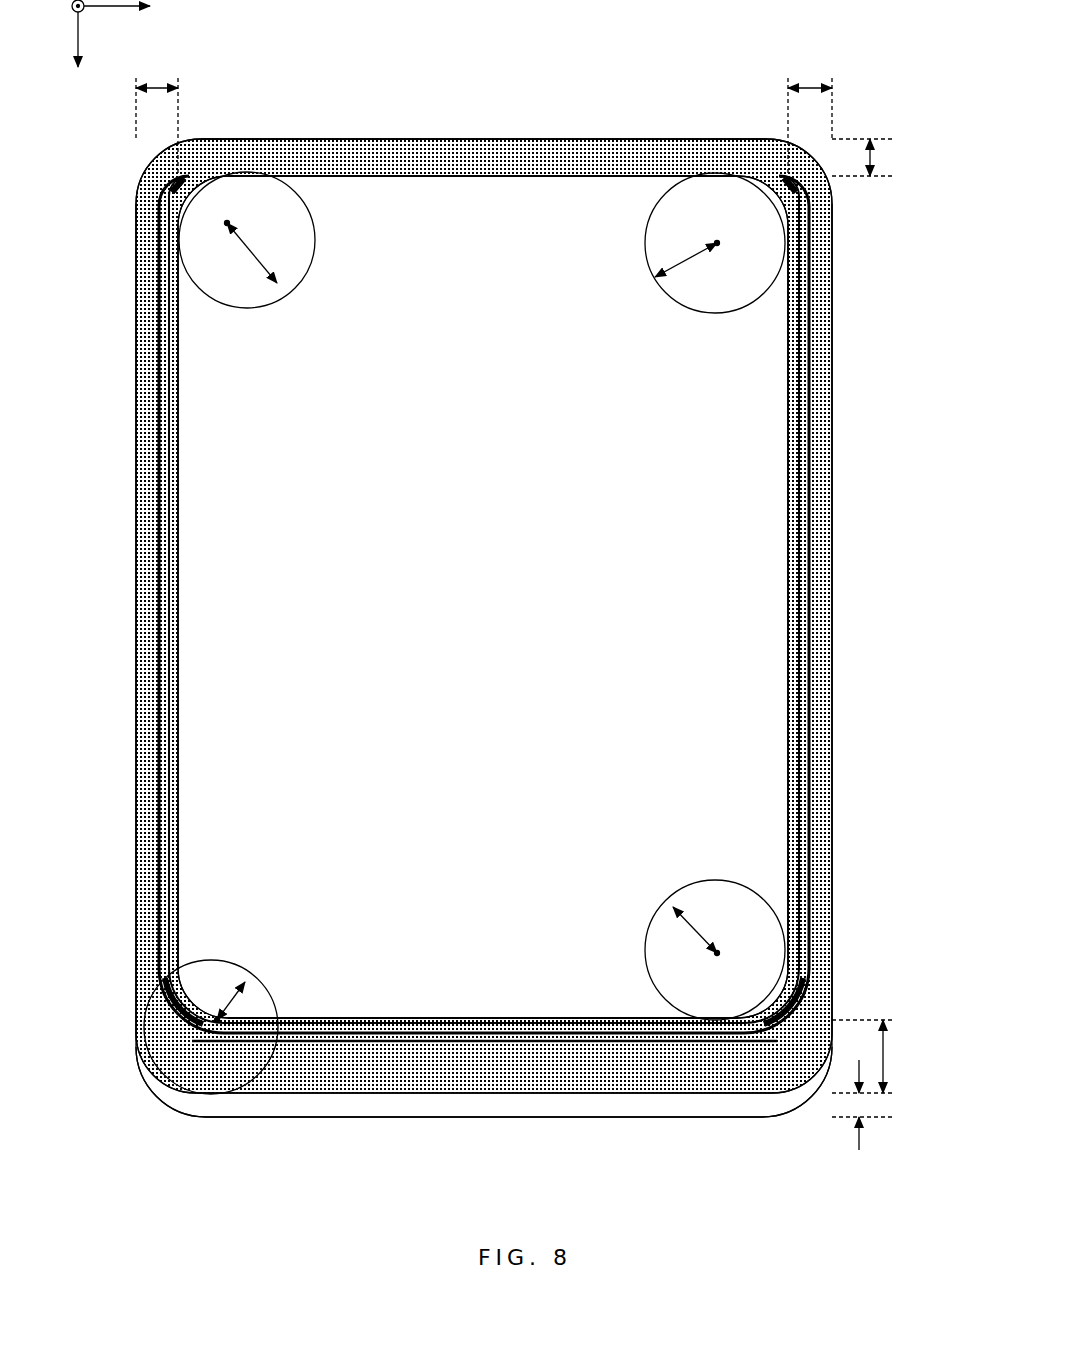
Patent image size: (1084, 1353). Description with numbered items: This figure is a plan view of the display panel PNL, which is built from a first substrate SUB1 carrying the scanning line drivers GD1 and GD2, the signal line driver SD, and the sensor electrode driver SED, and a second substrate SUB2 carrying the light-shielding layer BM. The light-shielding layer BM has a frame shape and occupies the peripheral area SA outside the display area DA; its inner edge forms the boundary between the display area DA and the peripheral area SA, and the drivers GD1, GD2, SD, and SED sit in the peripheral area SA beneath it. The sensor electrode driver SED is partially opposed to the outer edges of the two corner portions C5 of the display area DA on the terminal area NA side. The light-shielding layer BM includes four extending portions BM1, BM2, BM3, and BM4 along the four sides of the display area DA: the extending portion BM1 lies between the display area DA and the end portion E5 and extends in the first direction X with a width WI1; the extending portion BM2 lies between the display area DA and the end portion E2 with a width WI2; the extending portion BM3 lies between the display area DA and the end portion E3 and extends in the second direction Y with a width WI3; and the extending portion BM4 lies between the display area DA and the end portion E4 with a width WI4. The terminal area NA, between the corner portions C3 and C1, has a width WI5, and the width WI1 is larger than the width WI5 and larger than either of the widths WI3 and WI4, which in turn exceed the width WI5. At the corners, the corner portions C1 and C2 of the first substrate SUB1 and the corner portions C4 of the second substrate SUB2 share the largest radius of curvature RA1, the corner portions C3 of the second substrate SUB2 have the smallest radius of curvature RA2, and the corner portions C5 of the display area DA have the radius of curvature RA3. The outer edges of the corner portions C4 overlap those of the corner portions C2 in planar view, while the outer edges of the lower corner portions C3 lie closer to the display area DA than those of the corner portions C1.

The display panel PNL is at (848, 335).
The first substrate SUB1 is at (355, 1118).
The second substrate SUB2 is at (278, 1094).
The light-shielding layer BM is at (341, 145).
The extending portion BM1 is at (430, 1082).
The extending portion BM2 is at (418, 152).
The extending portion BM3 is at (163, 612).
The extending portion BM4 is at (815, 606).
The display area DA is at (503, 183).
The peripheral area SA is at (558, 150).
The terminal area NA is at (600, 1106).
The end portion E2 is at (627, 139).
The end portion E3 is at (137, 737).
The end portion E4 is at (833, 764).
The end portion E5 is at (708, 1094).
The scanning line driver GD1 is at (158, 500).
The scanning line driver GD2 is at (810, 485).
The sensor electrode driver SED is at (527, 1043).
The signal line driver SD is at (461, 1018).
The corner portion C1 is at (182, 1112).
The corner portion C2 is at (179, 172).
The corner portion C3 is at (838, 1062).
The corner portion C4 is at (419, 134).
The corner portion C5 is at (232, 232).
The radius of curvature RA1 is at (285, 285).
The radius of curvature RA2 is at (240, 1000).
The radius of curvature RA3 is at (682, 285).
The width WI1 is at (890, 1057).
The width WI2 is at (878, 162).
The width WI3 is at (155, 88).
The width WI4 is at (810, 88).
The width WI5 is at (890, 1105).
The first direction X is at (127, 10).
The second direction Y is at (77, 57).